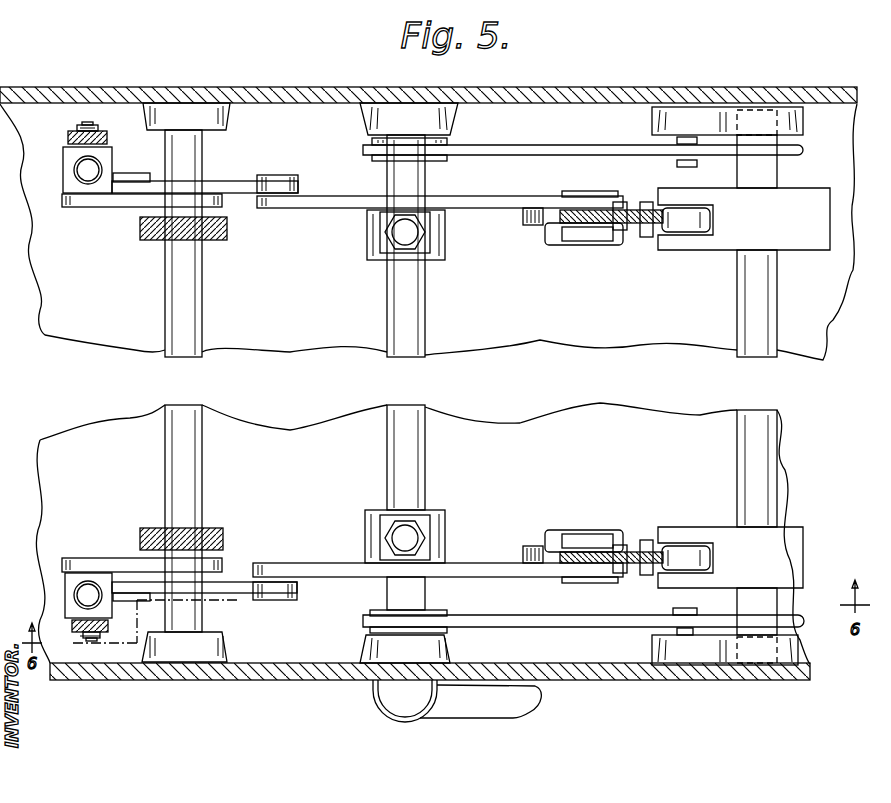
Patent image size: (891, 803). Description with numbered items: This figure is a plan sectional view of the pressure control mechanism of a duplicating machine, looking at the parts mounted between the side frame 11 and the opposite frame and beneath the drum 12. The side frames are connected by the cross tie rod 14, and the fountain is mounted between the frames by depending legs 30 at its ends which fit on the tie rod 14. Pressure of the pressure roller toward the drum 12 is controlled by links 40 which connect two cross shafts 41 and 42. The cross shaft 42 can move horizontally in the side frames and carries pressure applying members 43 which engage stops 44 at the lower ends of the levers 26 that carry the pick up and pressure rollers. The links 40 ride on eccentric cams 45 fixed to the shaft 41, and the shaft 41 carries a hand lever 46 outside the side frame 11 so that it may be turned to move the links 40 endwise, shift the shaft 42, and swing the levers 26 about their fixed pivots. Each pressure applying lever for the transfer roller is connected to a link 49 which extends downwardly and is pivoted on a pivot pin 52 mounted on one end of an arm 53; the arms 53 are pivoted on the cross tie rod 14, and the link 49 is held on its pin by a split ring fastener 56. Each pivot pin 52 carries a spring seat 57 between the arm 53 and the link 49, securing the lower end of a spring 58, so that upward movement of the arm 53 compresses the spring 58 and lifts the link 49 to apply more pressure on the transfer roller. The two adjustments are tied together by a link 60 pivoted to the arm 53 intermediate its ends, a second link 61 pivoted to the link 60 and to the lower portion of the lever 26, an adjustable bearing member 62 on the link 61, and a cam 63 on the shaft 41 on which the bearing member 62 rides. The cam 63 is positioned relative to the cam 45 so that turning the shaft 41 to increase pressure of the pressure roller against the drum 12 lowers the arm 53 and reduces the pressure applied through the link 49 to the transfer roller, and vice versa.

The side frame 11 is at (234, 682).
The drum 12 is at (294, 108).
The cross tie rod 14 is at (190, 293).
The lever 26 is at (635, 205).
The depending leg 30 is at (212, 240).
The link 40 is at (518, 150).
The cross shaft 41 is at (420, 183).
The cross shaft 42 is at (755, 175).
The pressure applying member 43 is at (725, 240).
The stop 44 is at (645, 238).
The eccentric cam 45 is at (372, 140).
The hand lever 46 is at (475, 712).
The link 49 is at (68, 136).
The pivot pin 52 is at (78, 122).
The arm 53 is at (108, 205).
The split ring fastener 56 is at (96, 126).
The spring seat 57 is at (63, 160).
The spring 58 is at (102, 164).
The link 60 is at (226, 182).
The second link 61 is at (514, 199).
The adjustable bearing member 62 is at (420, 238).
The cam 63 is at (368, 250).